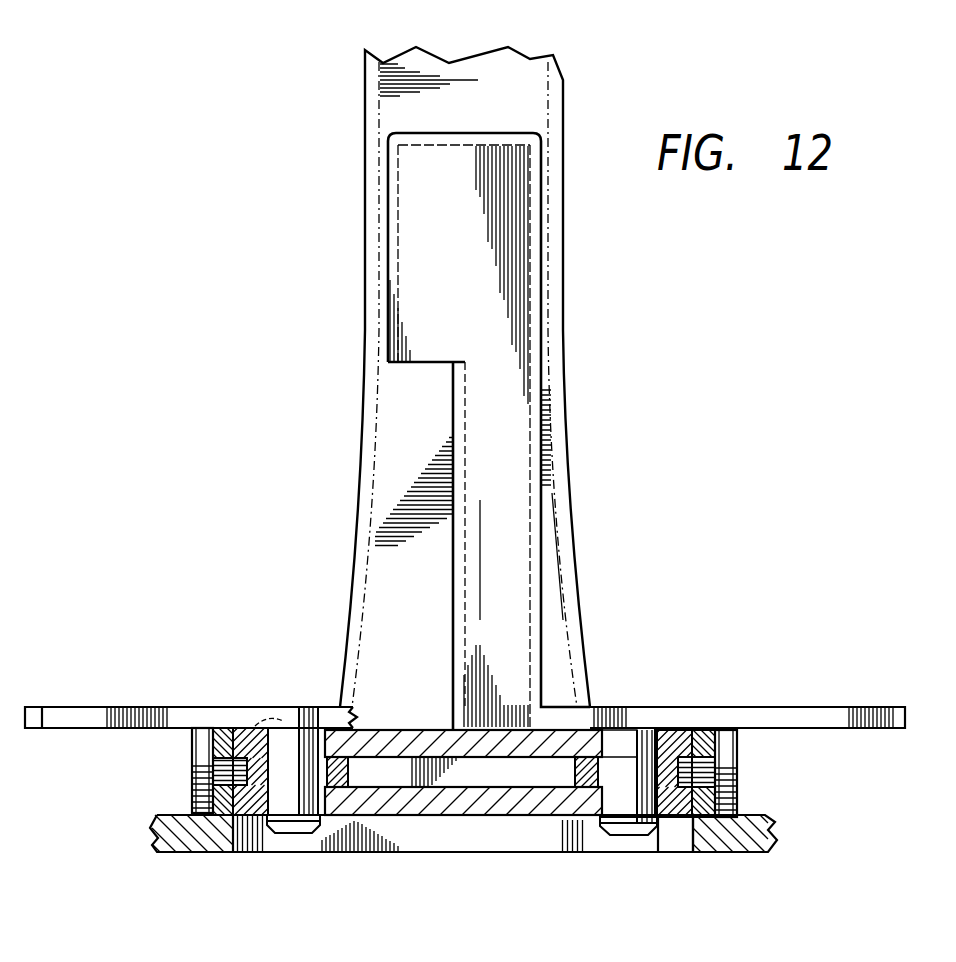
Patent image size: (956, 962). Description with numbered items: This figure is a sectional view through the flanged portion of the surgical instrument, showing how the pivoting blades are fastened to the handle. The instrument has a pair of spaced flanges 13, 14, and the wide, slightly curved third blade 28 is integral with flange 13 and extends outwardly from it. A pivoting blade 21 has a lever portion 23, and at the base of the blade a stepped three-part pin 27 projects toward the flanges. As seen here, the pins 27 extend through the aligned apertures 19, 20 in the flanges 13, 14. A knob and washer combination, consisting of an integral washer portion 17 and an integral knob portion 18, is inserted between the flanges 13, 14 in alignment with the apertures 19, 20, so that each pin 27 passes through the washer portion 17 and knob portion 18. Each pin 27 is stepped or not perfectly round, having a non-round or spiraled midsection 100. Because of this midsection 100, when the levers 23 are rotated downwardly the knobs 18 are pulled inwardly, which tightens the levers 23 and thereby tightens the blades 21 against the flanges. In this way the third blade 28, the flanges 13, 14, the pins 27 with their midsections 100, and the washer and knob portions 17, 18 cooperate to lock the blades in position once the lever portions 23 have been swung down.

The third blade 28 is at (522, 73).
The blade 21 is at (513, 312).
The lever portion 23 is at (75, 707).
The flange 14 is at (425, 743).
The flange 13 is at (465, 820).
The midsection 100 is at (288, 765).
The aperture 20 is at (658, 748).
The stepped pin 27 is at (617, 835).
The aperture 19 is at (213, 767).
The knob portion 18 is at (192, 783).
The washer portion 17 is at (205, 808).